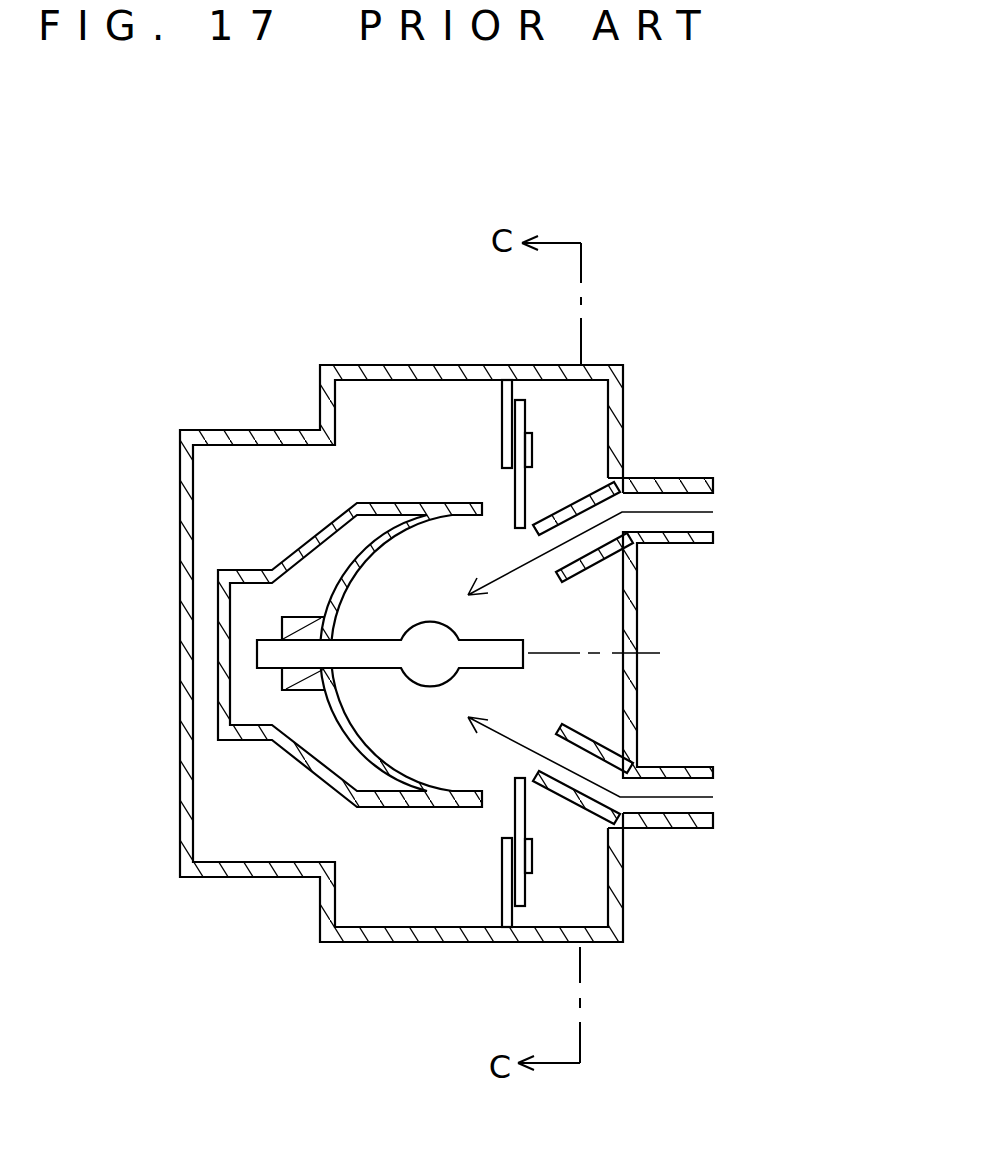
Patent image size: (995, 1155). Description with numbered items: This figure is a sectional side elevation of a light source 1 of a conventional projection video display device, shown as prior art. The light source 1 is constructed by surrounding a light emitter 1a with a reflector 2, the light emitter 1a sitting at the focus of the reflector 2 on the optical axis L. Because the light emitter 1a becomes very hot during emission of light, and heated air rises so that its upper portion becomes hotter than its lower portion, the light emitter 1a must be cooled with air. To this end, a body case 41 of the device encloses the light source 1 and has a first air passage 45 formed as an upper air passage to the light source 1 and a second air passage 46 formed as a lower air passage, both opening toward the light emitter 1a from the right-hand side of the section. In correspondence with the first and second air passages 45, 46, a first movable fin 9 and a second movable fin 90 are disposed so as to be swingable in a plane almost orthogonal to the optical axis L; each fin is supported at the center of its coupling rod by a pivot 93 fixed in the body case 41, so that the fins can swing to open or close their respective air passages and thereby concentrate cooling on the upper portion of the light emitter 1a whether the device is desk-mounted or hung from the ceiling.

The light source 1 is at (340, 296).
The light emitter 1a is at (430, 636).
The reflector 2 is at (373, 520).
The first movable fin 9 is at (527, 493).
The second movable fin 90 is at (527, 813).
The pivot 93 is at (532, 447).
The body case 41 is at (623, 405).
The first air passage 45 is at (693, 503).
The second air passage 46 is at (693, 805).
The optical axis L is at (648, 653).